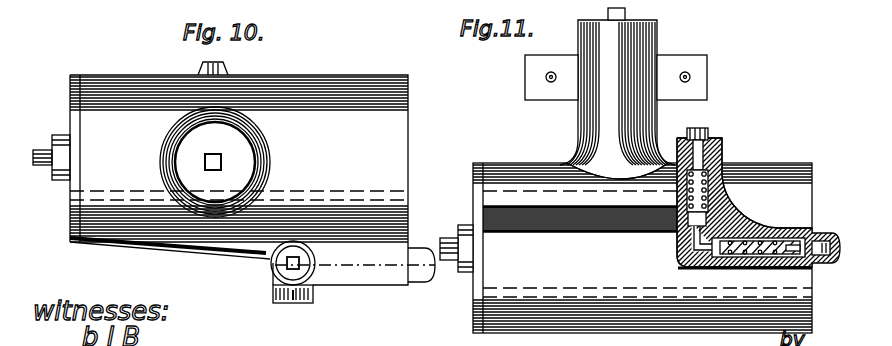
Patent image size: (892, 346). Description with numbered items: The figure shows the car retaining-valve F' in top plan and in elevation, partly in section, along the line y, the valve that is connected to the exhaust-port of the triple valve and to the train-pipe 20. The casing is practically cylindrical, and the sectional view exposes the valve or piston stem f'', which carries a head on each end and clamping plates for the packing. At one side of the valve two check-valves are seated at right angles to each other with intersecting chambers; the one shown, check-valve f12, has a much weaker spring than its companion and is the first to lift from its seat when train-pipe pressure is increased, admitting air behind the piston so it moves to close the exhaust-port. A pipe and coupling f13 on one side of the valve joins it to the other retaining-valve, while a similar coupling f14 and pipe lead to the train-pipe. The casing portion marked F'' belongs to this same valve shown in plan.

In FIG. 10, the casing body of valve (FIG. 10) F'' is at (252, 168).
In FIG. 10, the pipe and coupling f13 is at (200, 62).
In FIG. 10, the coupling f14 is at (272, 272).
In FIG. 10, the section line y is at (268, 265).
In FIG. 11, the section line y is at (456, 250).
In FIG. 11, the retaining-valve F' is at (642, 170).
In FIG. 11, the valve or piston stem f'' is at (711, 195).
In FIG. 11, the check-valve f12 is at (777, 235).
In FIG. 11, the train pipe 20 is at (773, 3).